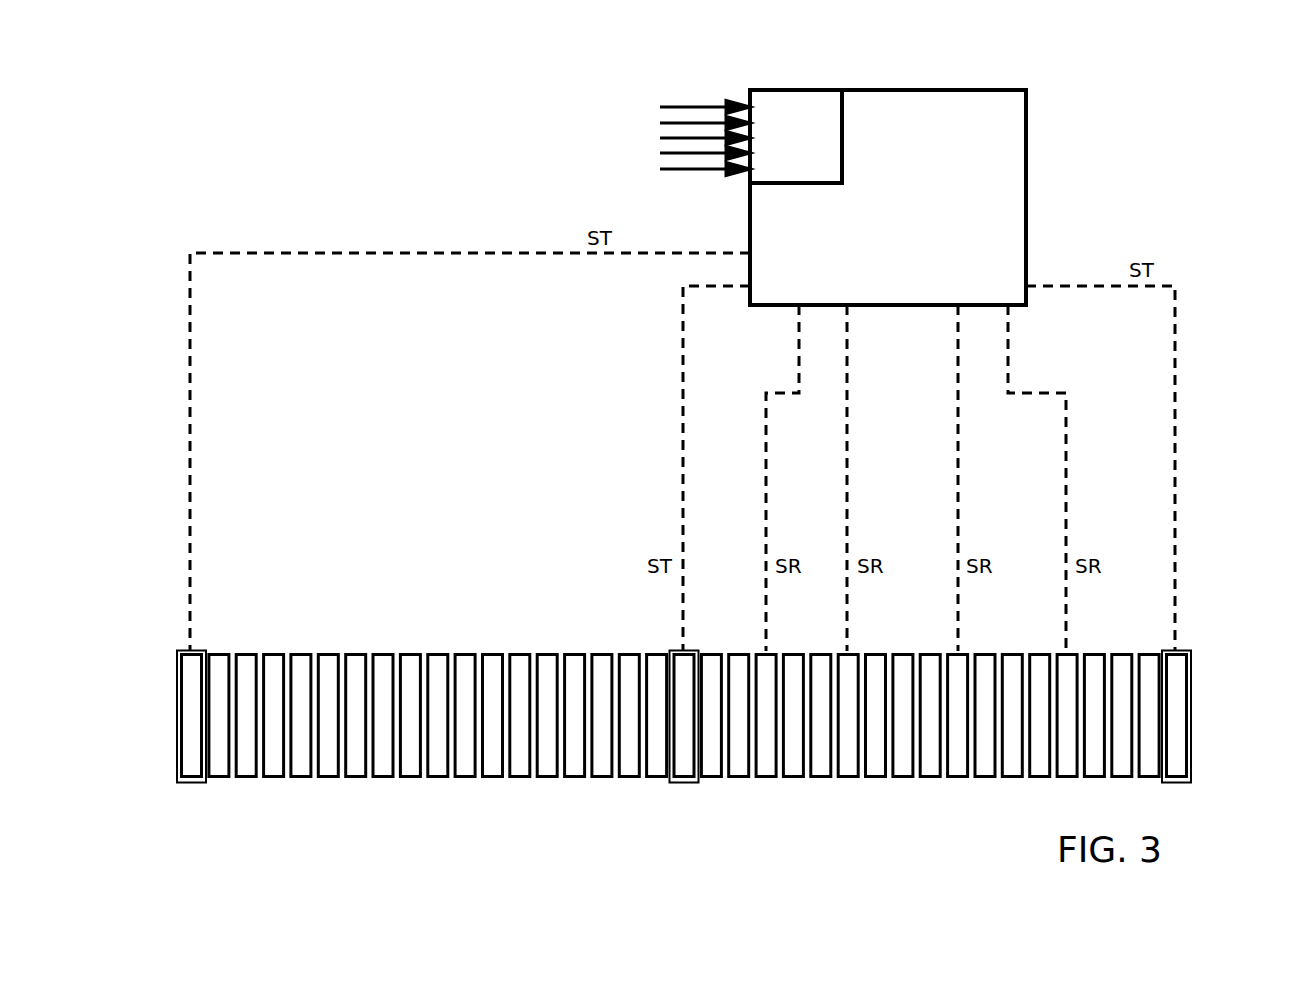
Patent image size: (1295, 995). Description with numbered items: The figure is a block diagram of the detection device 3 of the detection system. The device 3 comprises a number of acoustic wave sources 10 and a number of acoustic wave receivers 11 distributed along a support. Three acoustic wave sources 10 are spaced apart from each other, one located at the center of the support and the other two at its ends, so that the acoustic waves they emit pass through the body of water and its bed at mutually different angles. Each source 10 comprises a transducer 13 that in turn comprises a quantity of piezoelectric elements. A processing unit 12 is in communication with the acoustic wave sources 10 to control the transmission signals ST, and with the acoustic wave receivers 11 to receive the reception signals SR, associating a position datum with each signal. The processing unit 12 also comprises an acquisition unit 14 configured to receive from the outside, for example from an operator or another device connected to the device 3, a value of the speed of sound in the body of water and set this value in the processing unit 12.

The detection device 3 is at (1208, 662).
The acoustic wave source 10 is at (721, 726).
The acoustic wave receiver 11 is at (683, 748).
The processing unit 12 is at (985, 157).
The transducer 13 is at (694, 743).
The acquisition unit 14 is at (799, 117).